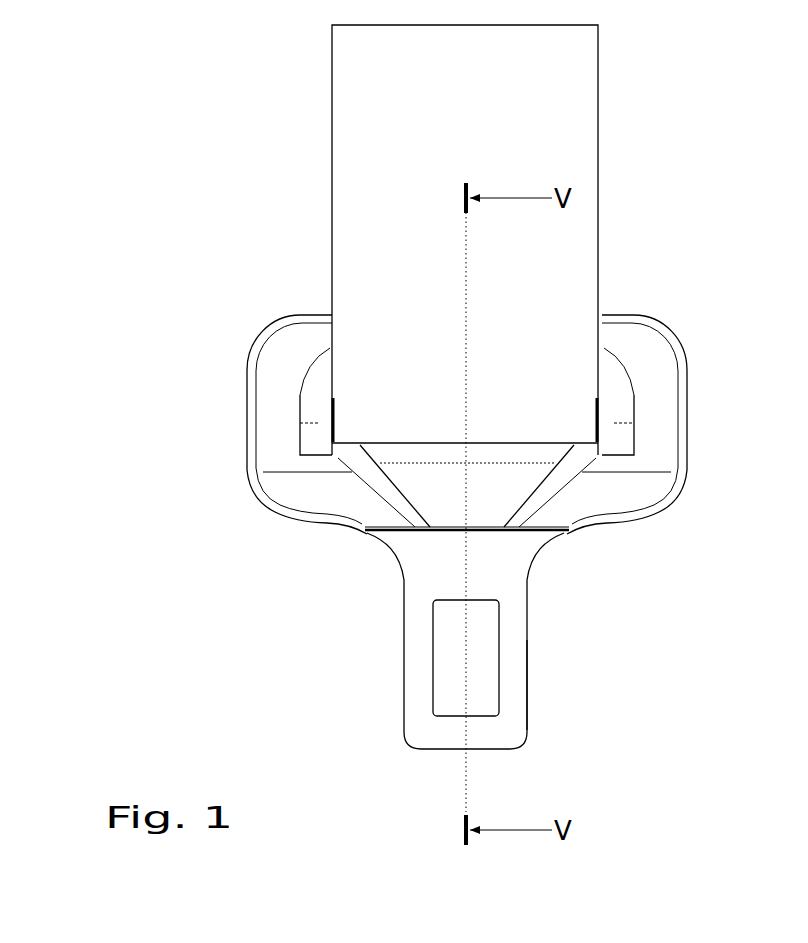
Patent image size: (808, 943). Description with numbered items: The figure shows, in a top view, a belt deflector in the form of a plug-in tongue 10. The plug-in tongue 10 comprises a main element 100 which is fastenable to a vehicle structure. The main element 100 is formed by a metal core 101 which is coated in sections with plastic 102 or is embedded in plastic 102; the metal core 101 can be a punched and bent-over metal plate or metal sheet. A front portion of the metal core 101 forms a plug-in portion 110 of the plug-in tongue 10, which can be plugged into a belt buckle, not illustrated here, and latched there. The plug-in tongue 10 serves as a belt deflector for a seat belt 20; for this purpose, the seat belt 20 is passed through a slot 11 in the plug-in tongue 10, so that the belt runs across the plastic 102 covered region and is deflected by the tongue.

The seat belt 20 is at (569, 117).
The plug-in tongue 10 is at (660, 372).
The slot 11 is at (415, 443).
The plastic 102 is at (643, 498).
The main element 100 is at (505, 570).
The plug-in portion 110 is at (443, 672).
The metal core 101 is at (523, 698).